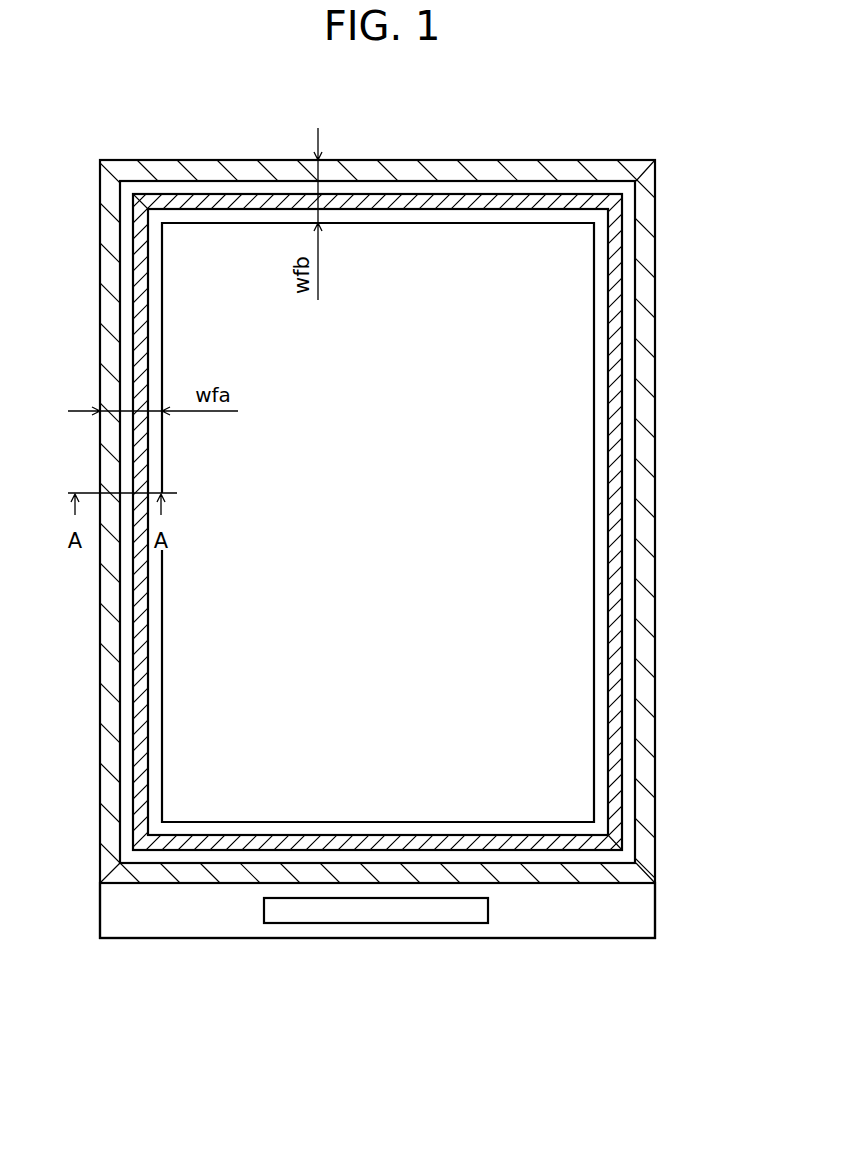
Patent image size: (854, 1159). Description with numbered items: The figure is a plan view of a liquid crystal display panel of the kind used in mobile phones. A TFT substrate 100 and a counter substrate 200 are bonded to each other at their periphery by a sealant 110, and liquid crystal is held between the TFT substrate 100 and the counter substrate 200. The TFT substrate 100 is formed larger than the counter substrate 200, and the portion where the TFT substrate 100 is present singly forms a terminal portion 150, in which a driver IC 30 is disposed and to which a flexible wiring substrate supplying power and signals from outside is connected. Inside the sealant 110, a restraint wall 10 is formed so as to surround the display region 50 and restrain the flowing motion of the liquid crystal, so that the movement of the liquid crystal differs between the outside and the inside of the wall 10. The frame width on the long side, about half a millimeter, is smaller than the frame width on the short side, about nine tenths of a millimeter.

The wall 10 is at (613, 498).
The driver IC 30 is at (413, 912).
The display region 50 is at (523, 398).
The TFT substrate 100 is at (652, 905).
The sealant 110 is at (645, 603).
The terminal portion 150 is at (555, 915).
The counter substrate 200 is at (655, 702).